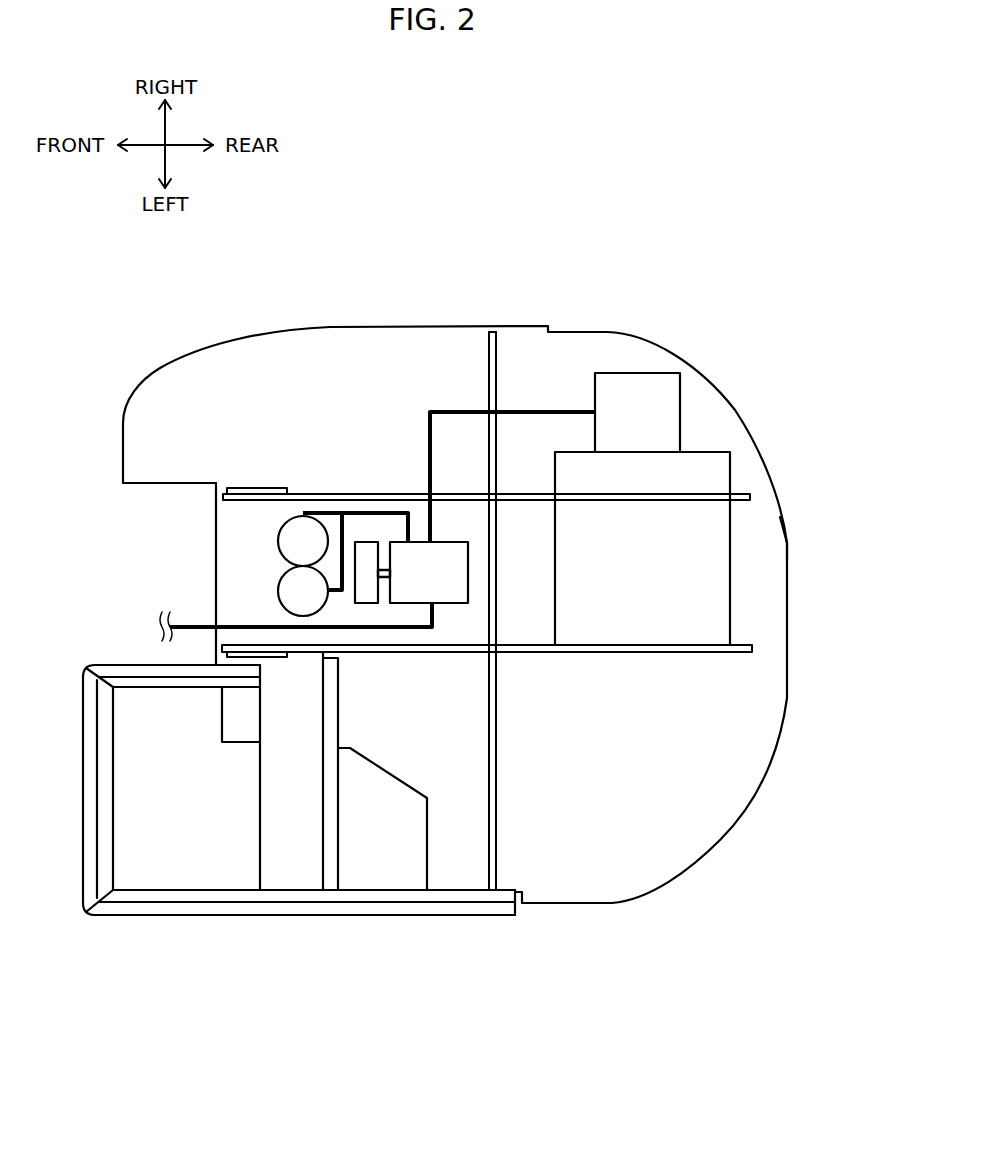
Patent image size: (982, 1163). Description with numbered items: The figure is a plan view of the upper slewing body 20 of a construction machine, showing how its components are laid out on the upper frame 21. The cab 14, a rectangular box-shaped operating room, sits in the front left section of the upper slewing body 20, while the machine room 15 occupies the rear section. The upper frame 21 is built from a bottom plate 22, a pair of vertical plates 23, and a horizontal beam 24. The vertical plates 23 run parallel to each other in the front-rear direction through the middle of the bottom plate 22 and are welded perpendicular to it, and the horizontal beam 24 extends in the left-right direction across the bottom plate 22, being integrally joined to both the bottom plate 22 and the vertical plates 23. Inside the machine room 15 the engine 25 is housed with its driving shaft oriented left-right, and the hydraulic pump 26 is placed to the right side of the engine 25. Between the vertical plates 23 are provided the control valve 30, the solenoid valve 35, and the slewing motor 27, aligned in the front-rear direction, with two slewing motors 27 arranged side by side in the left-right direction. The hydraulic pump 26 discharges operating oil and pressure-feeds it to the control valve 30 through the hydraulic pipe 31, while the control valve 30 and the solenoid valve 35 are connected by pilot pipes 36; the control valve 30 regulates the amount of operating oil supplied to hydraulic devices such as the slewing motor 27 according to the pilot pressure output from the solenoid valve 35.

The cab 14 is at (263, 917).
The machine room 15 is at (563, 372).
The upper slewing body 20 is at (307, 293).
The upper frame 21 is at (725, 407).
The bottom plate 22 is at (787, 515).
The vertical plates 23 is at (460, 492).
The horizontal beam 24 is at (489, 695).
The engine 25 is at (728, 568).
The hydraulic pump 26 is at (638, 373).
The slewing motor 27 is at (278, 543).
The control valve 30 is at (468, 570).
The hydraulic pipe 31 is at (453, 410).
The solenoid valve 35 is at (367, 540).
The pilot pipes 36 is at (381, 570).